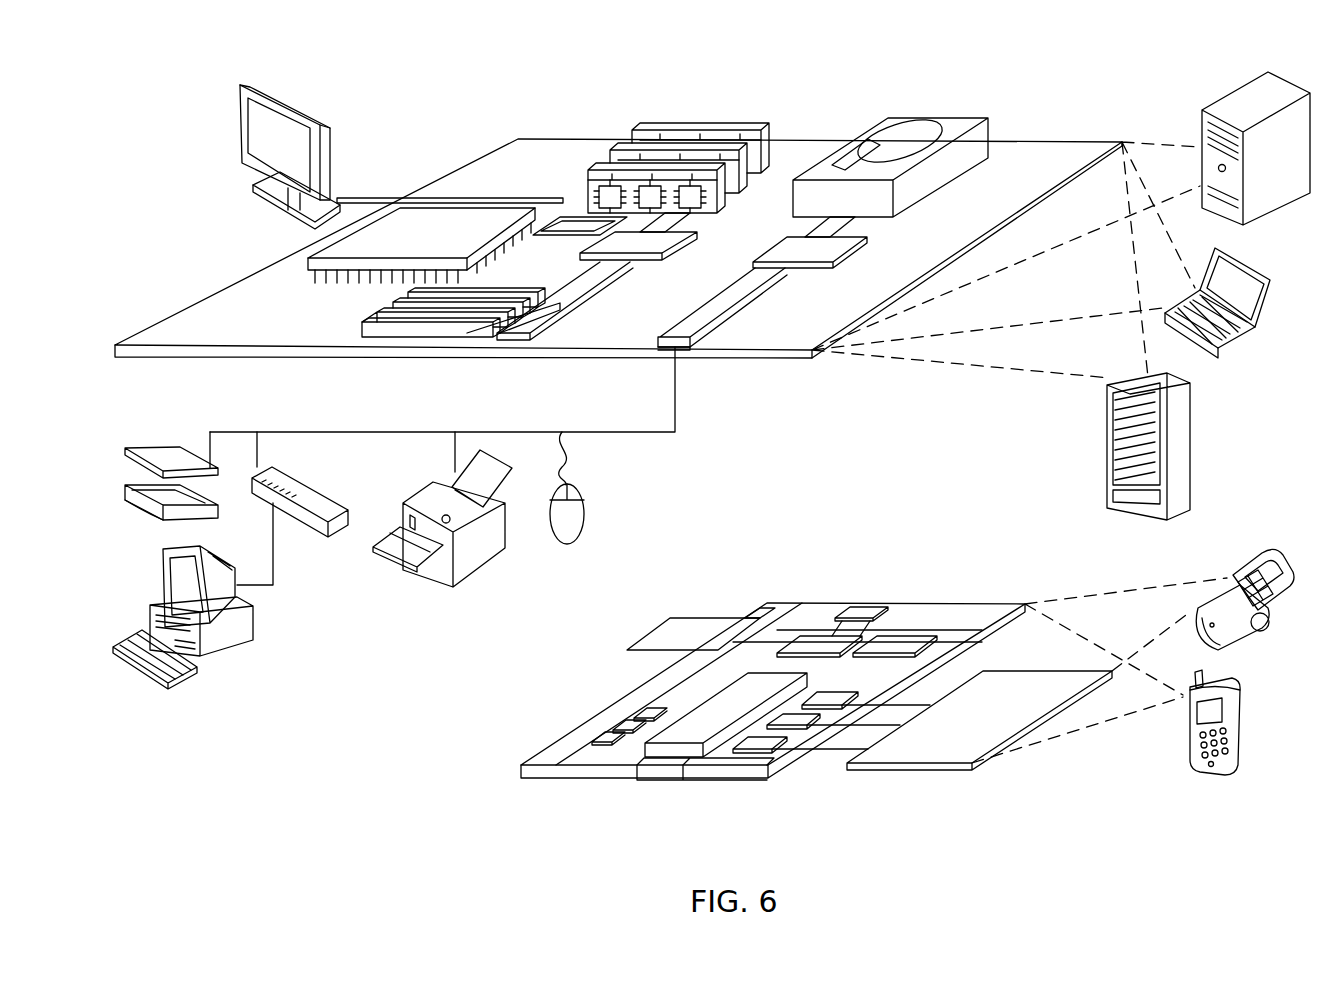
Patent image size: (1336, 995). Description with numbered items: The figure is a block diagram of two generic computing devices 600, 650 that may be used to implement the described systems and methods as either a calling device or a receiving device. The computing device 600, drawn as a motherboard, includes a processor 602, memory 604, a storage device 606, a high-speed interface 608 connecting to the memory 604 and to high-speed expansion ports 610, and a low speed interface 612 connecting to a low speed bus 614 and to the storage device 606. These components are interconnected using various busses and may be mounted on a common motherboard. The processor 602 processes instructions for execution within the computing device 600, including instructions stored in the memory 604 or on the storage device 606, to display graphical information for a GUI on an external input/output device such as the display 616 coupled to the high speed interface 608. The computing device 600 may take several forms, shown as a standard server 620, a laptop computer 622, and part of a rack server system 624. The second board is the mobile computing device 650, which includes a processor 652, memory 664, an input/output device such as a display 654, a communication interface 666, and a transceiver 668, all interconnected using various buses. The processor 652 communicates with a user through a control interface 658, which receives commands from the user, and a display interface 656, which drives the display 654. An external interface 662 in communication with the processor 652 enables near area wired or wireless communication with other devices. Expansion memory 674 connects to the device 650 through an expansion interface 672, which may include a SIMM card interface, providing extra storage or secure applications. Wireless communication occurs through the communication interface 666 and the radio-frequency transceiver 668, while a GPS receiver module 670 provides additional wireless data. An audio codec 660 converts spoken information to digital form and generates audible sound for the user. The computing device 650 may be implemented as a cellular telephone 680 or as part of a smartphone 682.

The computing device 600 is at (442, 110).
The processor 602 is at (318, 264).
The memory 604 is at (633, 165).
The storage device 606 is at (870, 128).
The high-speed interface 608 is at (600, 245).
The high-speed expansion ports 610 is at (400, 325).
The low speed interface 612 is at (795, 250).
The low speed bus 614 is at (705, 350).
The display 616 is at (242, 86).
The standard server 620 is at (1202, 128).
The laptop computer 622 is at (1262, 272).
The rack server system 624 is at (1107, 470).
The computing device 650 is at (500, 776).
The processor 652 is at (698, 747).
The display 654 is at (940, 752).
The display interface 656 is at (768, 747).
The control interface 658 is at (800, 726).
The audio codec 660 is at (823, 706).
The external interface 662 is at (663, 772).
The memory 664 is at (610, 737).
The communication interface 666 is at (814, 643).
The transceiver 668 is at (897, 643).
The GPS receiver module 670 is at (865, 612).
The expansion interface 672 is at (748, 610).
The expansion memory 674 is at (672, 618).
The cellular telephone 680 is at (1238, 558).
The smartphone 682 is at (1190, 725).